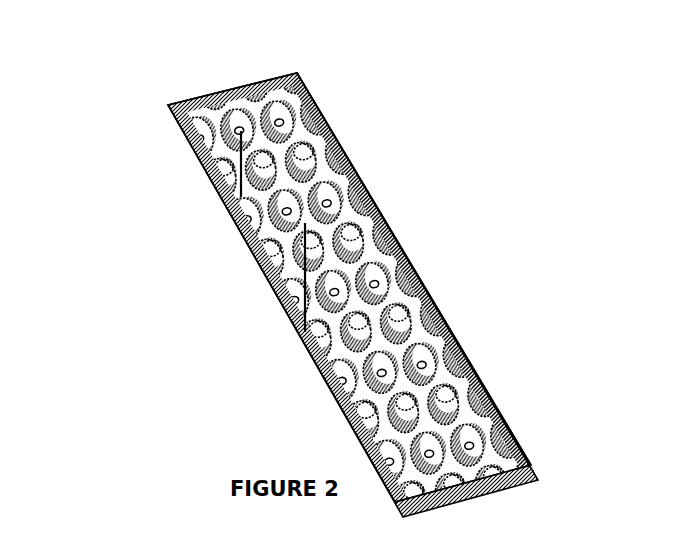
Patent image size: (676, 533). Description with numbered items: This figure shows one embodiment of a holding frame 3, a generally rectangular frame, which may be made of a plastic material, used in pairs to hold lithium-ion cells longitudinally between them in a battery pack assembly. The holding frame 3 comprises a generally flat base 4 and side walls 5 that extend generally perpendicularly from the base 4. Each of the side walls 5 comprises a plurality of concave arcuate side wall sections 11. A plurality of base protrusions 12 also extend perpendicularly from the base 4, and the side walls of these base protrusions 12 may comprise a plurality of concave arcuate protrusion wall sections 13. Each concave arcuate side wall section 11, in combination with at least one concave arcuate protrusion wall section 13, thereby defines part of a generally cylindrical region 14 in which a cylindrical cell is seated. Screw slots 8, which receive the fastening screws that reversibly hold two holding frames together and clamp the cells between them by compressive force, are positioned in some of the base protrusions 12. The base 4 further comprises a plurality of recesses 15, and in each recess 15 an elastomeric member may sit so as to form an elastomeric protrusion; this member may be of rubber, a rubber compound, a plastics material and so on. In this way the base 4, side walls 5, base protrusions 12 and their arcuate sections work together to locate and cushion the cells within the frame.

The holding frame 3 is at (154, 96).
The base 4 is at (304, 330).
The side walls 5 is at (338, 155).
The screw slots 8 is at (240, 197).
The concave arcuate side wall sections 11 is at (418, 298).
The base protrusions 12 is at (443, 408).
The concave arcuate protrusion wall sections 13 is at (467, 463).
The generally cylindrical region 14 is at (287, 100).
The recesses 15 is at (363, 410).